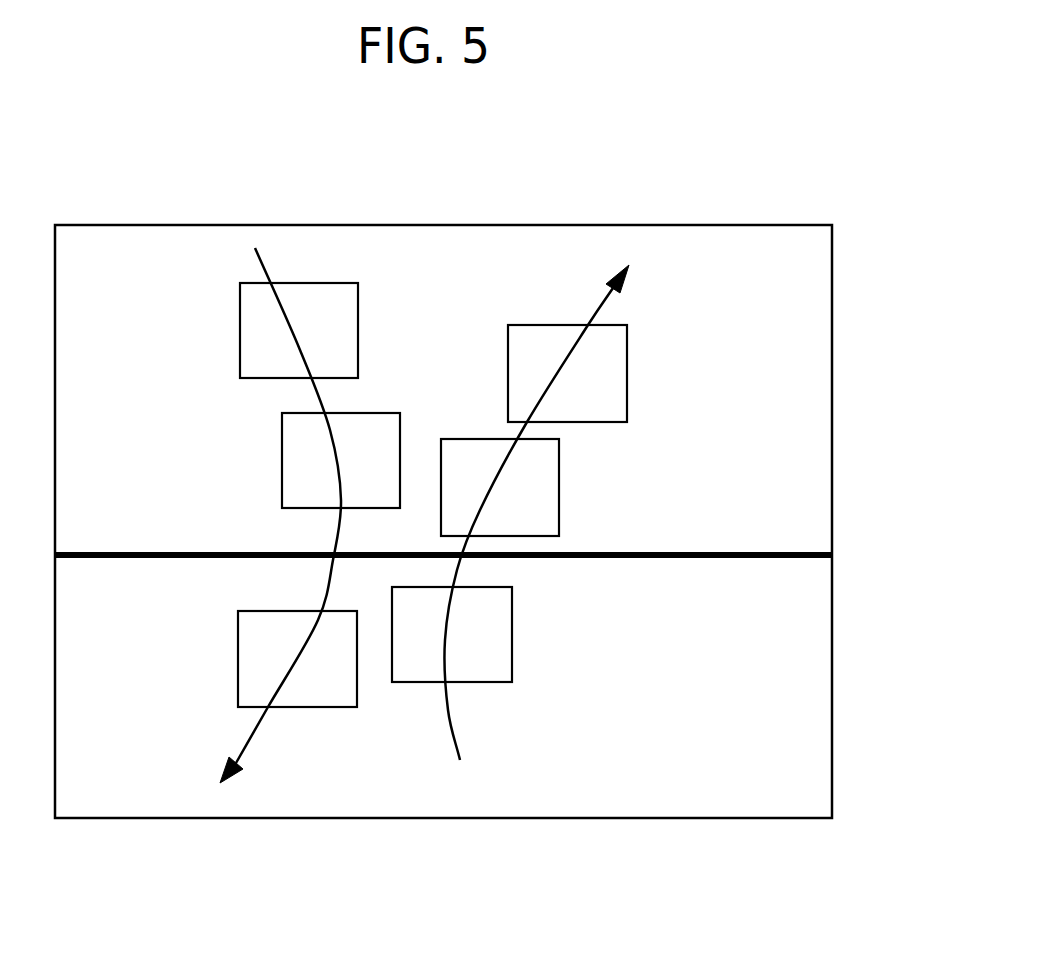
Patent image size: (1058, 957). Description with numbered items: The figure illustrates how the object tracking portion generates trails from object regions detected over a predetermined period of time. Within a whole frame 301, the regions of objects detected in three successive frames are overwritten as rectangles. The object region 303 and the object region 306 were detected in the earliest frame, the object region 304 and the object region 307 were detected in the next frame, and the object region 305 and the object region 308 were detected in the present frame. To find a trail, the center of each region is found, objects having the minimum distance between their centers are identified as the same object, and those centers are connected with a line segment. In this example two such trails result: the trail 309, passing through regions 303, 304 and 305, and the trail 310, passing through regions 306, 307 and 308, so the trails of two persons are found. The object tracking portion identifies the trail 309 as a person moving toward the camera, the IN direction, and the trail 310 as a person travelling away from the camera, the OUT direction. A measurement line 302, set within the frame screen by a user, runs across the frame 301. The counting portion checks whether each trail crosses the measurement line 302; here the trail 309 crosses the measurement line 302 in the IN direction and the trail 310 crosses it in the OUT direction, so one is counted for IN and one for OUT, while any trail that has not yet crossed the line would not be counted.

The whole frame 301 is at (722, 224).
The measurement line 302 is at (832, 553).
The object region 303 is at (240, 315).
The object region 304 is at (282, 437).
The object region 305 is at (238, 633).
The object region 306 is at (512, 622).
The object region 307 is at (559, 480).
The object region 308 is at (627, 365).
The trail 309 is at (265, 262).
The trail 310 is at (455, 738).